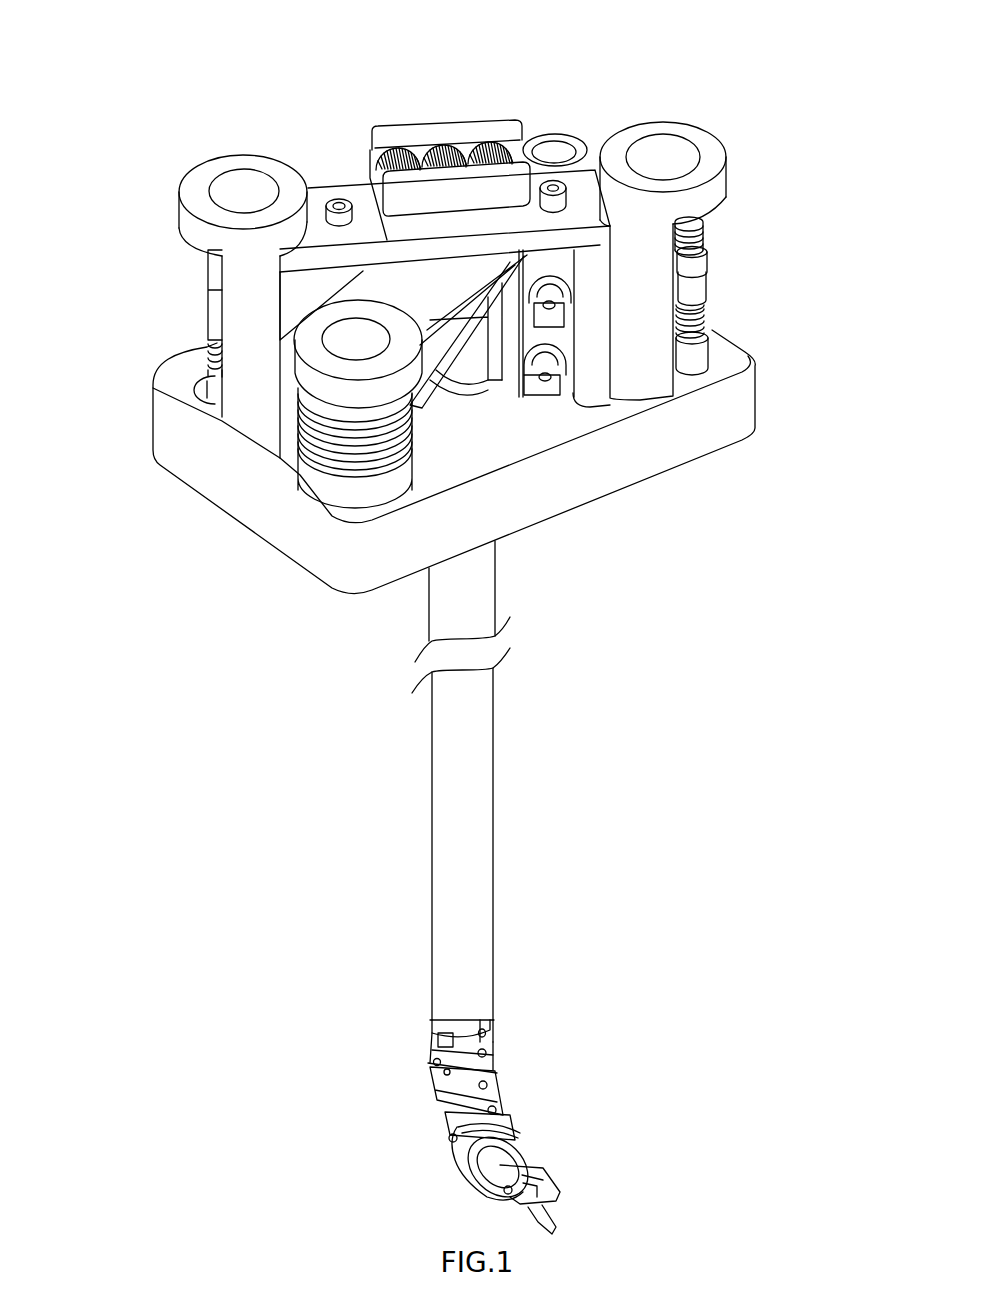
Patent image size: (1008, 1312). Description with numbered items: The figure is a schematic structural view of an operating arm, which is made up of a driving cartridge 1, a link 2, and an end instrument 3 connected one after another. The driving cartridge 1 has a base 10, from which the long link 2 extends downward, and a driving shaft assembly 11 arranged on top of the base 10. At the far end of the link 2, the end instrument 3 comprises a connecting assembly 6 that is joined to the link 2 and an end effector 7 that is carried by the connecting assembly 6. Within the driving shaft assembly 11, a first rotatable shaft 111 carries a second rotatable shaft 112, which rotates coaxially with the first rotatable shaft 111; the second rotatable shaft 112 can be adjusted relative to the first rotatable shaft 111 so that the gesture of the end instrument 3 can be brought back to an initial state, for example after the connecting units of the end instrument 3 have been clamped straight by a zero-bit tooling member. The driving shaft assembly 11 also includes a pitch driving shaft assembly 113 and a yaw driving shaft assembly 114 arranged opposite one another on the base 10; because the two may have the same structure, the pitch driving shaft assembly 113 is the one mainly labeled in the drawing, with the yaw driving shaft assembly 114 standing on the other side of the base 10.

The driving cartridge 1 is at (435, 128).
The link 2 is at (485, 777).
The end instrument 3 is at (512, 1113).
The connecting assembly 6 is at (488, 1066).
The end effector 7 is at (543, 1190).
The base 10 is at (735, 357).
The driving shaft assembly 11 is at (585, 138).
The first rotatable shaft 111 is at (697, 307).
The second rotatable shaft 112 is at (676, 236).
The pitch driving shaft assembly 113 is at (715, 263).
The yaw driving shaft assembly 114 is at (205, 275).